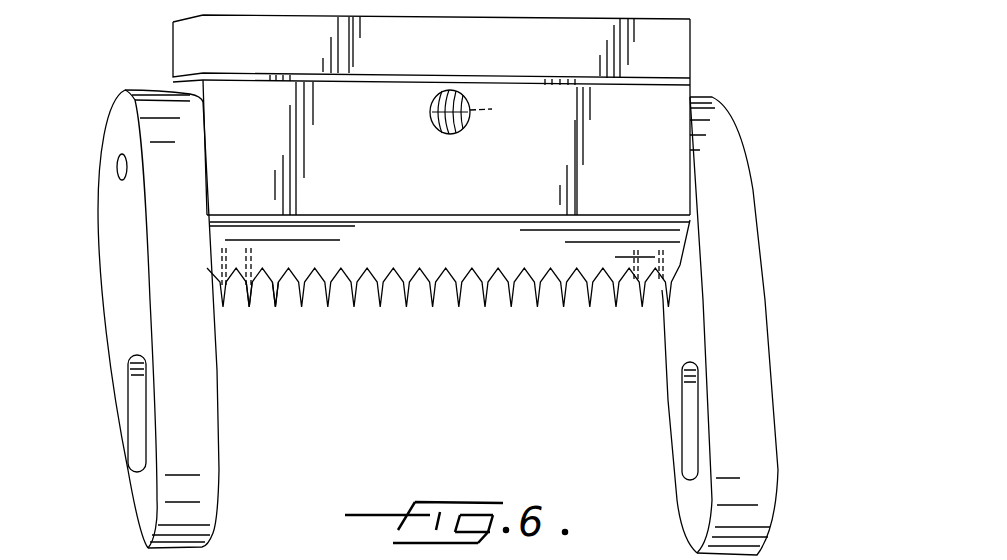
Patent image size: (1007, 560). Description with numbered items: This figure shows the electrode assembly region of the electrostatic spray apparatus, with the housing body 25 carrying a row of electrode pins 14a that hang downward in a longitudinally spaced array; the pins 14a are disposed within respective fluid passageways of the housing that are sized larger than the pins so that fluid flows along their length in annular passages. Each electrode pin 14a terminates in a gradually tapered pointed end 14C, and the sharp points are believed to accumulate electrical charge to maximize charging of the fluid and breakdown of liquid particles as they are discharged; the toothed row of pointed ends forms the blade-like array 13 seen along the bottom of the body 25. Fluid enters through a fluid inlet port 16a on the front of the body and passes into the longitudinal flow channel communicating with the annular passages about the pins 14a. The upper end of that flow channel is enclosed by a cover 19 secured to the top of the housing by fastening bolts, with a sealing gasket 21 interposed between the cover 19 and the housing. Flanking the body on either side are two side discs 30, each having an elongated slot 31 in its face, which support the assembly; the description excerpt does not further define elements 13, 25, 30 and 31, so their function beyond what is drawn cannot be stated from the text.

The toothed blade plate 13 is at (517, 291).
The electrode pins 14a is at (222, 250).
The tapered pointed end 14C is at (250, 303).
The fluid inlet port 16a is at (450, 118).
The cover 19 is at (185, 35).
The sealing gasket 21 is at (658, 77).
The blade holder body 25 is at (672, 172).
The side discs / wheels 30 is at (125, 333).
The slots in discs 31 is at (135, 430).